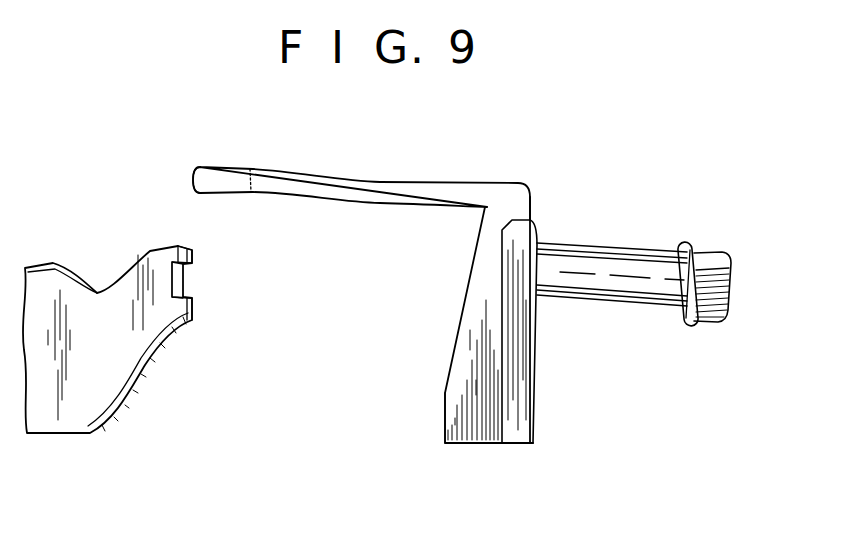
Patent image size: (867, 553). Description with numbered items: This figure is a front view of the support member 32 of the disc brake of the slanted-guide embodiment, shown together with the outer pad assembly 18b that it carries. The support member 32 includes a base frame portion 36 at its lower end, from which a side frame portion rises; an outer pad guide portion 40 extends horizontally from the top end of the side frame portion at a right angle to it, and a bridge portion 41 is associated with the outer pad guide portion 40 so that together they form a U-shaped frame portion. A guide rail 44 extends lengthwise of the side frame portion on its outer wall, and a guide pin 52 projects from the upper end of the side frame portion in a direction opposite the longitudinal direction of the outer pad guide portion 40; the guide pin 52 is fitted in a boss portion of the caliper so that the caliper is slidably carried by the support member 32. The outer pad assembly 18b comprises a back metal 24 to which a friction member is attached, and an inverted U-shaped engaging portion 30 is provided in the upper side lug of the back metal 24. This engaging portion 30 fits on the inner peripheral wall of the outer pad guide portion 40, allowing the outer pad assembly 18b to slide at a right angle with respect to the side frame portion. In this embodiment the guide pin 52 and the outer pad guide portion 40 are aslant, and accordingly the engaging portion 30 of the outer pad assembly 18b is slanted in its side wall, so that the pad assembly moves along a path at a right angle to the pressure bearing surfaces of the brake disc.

The outer pad assembly 18b is at (75, 247).
The back metal 24 is at (92, 382).
The engaging portion 30 is at (180, 283).
The outer pad guide portion 40 is at (340, 193).
The bridge portion 41 is at (222, 170).
The support member 32 is at (536, 386).
The base frame portion 36 is at (457, 420).
The guide rail 44 is at (517, 325).
The guide pin 52 is at (622, 262).